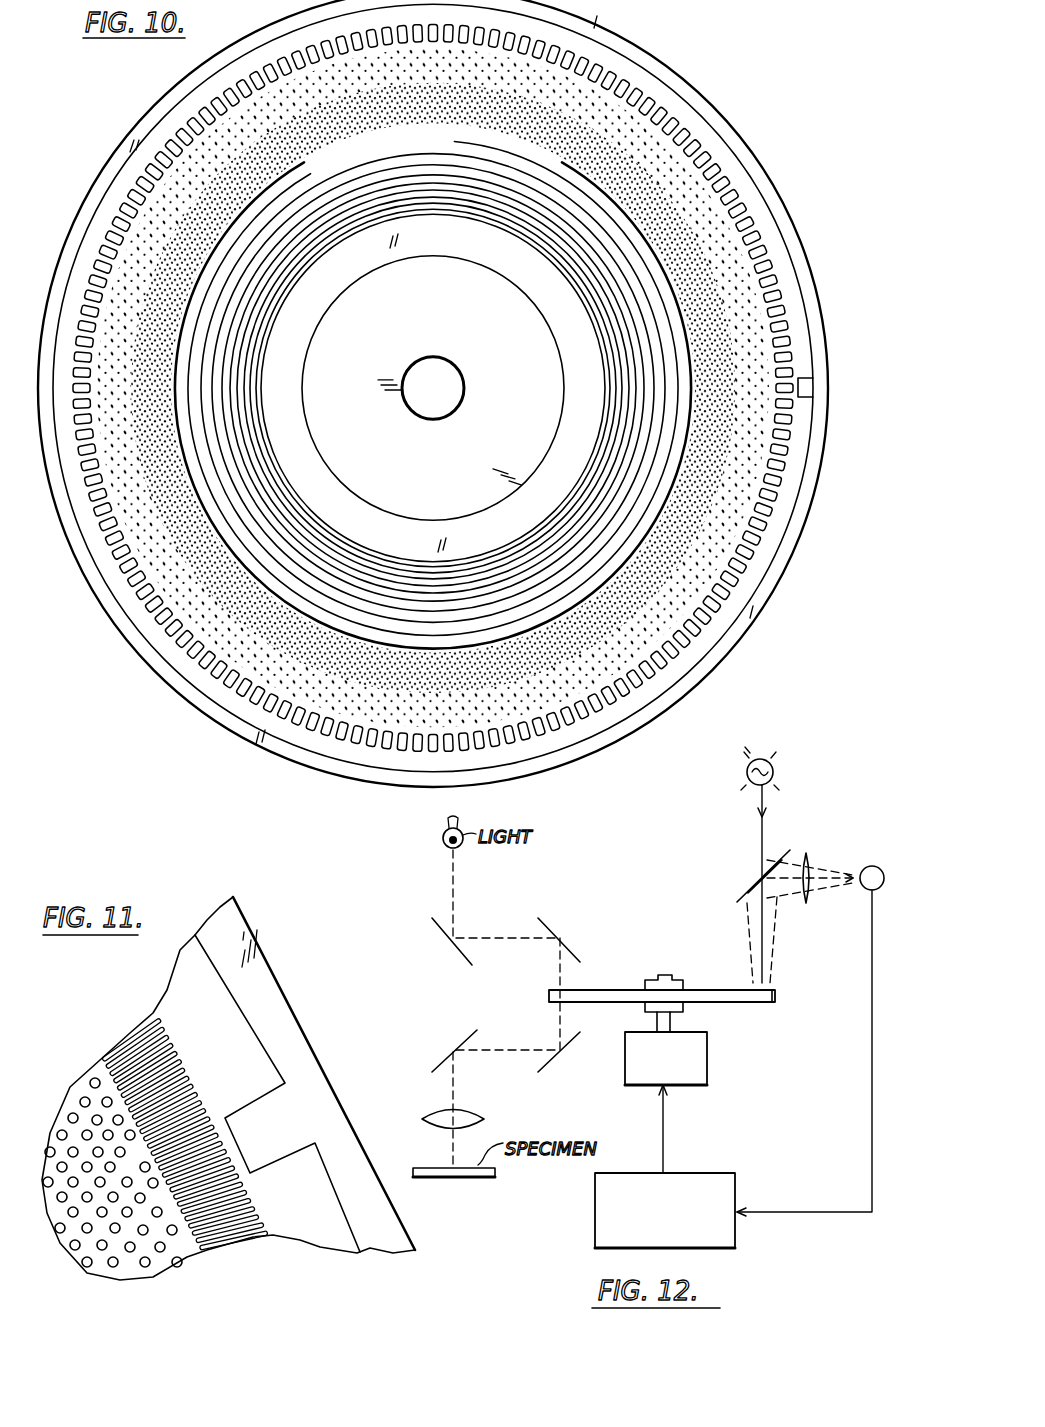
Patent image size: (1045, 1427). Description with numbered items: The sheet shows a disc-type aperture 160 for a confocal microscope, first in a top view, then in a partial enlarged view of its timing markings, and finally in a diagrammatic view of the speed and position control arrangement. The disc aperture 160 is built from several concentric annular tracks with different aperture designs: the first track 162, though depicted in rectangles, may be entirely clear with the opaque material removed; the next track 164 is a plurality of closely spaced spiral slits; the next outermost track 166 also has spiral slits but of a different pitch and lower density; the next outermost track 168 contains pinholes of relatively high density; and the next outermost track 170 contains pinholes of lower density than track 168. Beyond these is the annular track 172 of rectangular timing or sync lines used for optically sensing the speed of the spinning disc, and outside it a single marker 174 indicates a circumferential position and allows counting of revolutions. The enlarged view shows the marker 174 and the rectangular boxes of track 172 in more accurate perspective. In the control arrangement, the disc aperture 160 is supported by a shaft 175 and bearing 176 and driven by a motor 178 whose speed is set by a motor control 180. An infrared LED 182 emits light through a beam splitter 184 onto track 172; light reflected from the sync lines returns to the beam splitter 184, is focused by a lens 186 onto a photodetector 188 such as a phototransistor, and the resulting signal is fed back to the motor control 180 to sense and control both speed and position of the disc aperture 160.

In FIG. 10, the disc-type aperture 160 is at (688, 68).
In FIG. 11, the disc-type aperture 160 is at (288, 955).
In FIG. 12, the disc-type aperture 160 is at (605, 988).
In FIG. 10, the first track 162 is at (562, 346).
In FIG. 10, the track of spiral slits 164 is at (622, 402).
In FIG. 10, the track of spiral slits 166 is at (675, 344).
In FIG. 10, the track of pinholes 168 is at (700, 272).
In FIG. 10, the track of pinholes 170 is at (690, 198).
In FIG. 11, the track of pinholes 170 is at (63, 1127).
In FIG. 10, the track of rectangular timing lines 172 is at (760, 510).
In FIG. 11, the track of rectangular timing lines 172 is at (130, 1055).
In FIG. 12, the track of rectangular timing lines 172 is at (770, 985).
In FIG. 10, the marker 174 is at (815, 386).
In FIG. 11, the marker 174 is at (283, 1117).
In FIG. 12, the shaft 175 is at (668, 1025).
In FIG. 12, the bearing 176 is at (647, 1012).
In FIG. 12, the motor 178 is at (708, 1077).
In FIG. 12, the motor control 180 is at (597, 1228).
In FIG. 12, the infrared LED 182 is at (767, 753).
In FIG. 12, the beam splitter 184 is at (760, 882).
In FIG. 12, the lens 186 is at (813, 903).
In FIG. 12, the photodetector 188 is at (863, 865).